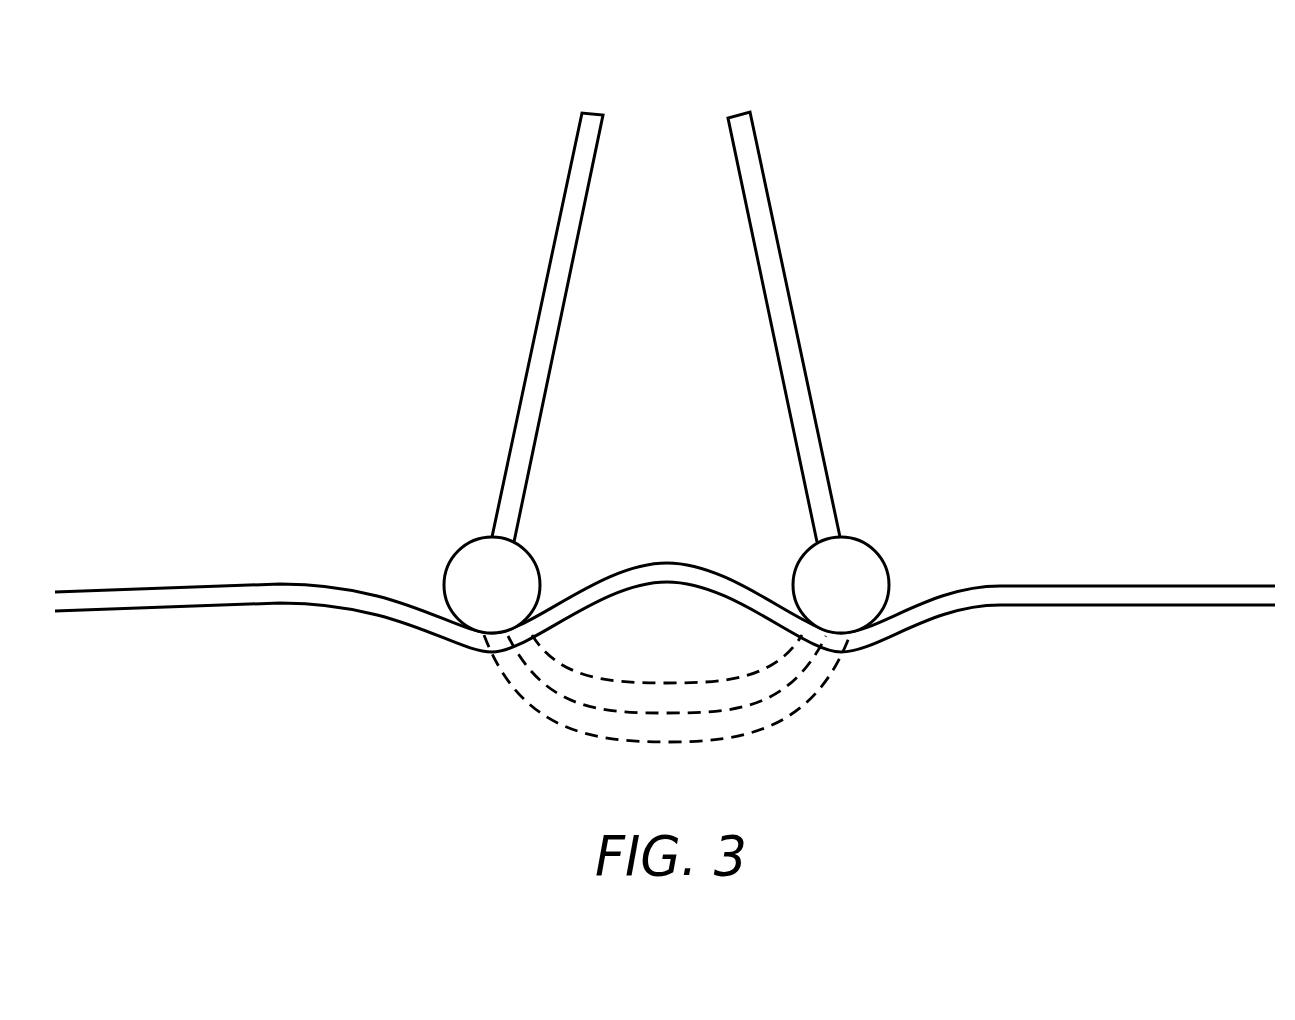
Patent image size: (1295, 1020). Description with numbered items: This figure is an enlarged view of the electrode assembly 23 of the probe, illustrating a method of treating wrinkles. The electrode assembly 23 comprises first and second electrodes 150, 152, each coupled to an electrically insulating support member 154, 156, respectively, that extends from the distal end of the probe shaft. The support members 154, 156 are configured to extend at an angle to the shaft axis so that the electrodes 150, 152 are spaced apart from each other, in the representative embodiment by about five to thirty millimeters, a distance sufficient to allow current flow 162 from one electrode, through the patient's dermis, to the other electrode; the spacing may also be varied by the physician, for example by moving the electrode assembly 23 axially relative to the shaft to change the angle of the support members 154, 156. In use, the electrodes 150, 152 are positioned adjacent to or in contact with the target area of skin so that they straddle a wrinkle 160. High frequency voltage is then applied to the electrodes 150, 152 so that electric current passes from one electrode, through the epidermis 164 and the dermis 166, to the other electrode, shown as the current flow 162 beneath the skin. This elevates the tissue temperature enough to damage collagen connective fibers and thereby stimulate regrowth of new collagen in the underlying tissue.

The electrode assembly 23 is at (852, 122).
The first electrode 150 is at (872, 541).
The second electrode 152 is at (452, 555).
The electrically insulating support member 154 is at (788, 272).
The electrically insulating support member 156 is at (547, 282).
The wrinkle 160 is at (667, 563).
The current flow 162 is at (545, 710).
The epidermis 164 is at (1103, 653).
The dermis 166 is at (1136, 600).